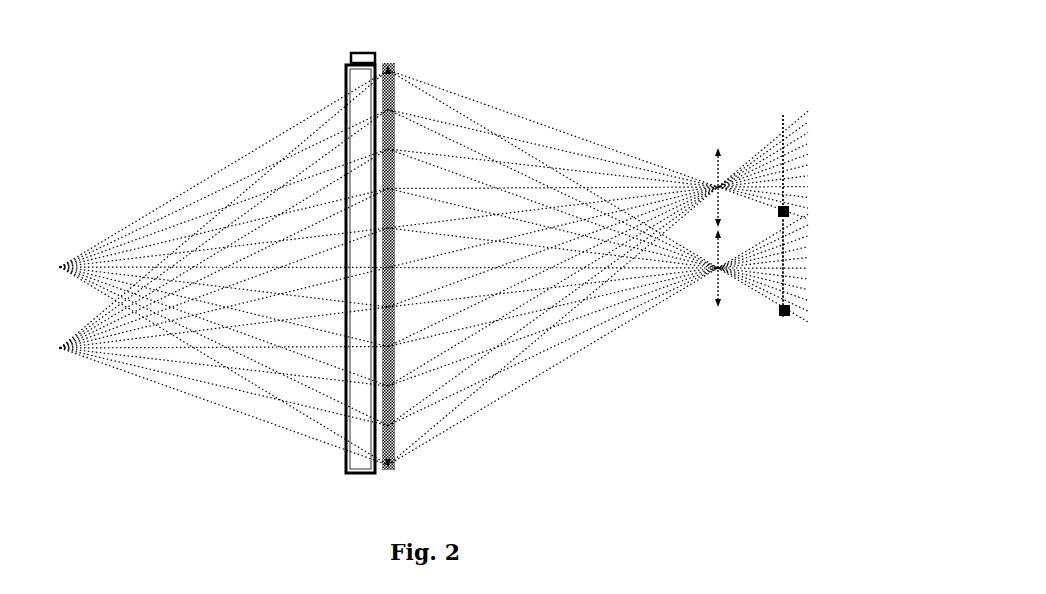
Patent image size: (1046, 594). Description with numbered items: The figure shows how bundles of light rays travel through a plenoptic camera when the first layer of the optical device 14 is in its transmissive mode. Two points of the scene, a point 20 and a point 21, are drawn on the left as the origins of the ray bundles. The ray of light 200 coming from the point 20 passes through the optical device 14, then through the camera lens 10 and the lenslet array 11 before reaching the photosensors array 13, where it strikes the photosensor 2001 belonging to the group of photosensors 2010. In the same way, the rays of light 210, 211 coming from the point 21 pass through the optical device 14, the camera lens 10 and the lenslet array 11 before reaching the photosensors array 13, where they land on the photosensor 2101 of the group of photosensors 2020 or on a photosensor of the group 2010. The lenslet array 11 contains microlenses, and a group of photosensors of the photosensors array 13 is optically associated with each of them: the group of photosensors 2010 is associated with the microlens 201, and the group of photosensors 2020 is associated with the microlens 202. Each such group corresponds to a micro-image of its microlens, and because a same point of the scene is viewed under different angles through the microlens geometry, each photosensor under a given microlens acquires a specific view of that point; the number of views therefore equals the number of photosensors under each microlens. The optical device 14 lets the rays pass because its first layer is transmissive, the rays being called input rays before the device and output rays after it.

The point of the scene 20 is at (60, 265).
The point of the scene 21 is at (60, 352).
The ray of light 200 is at (205, 177).
The ray of light 210 is at (312, 130).
The ray of light 211 is at (162, 337).
The camera lens 10 is at (397, 66).
The optical device 14 is at (360, 476).
The lenslet array 11 is at (683, 186).
The microlens 201 is at (712, 175).
The microlens 202 is at (712, 292).
The photosensors array 13 is at (795, 252).
The group of photosensors 2010 is at (783, 118).
The group of photosensors 2020 is at (782, 286).
The photosensor 2001 is at (790, 212).
The photosensor 2101 is at (792, 312).